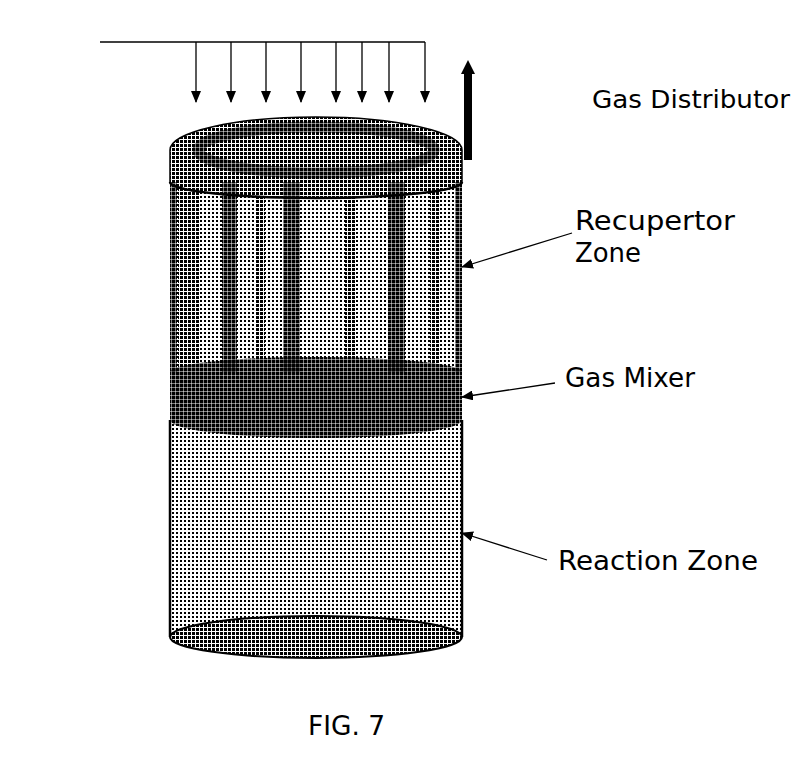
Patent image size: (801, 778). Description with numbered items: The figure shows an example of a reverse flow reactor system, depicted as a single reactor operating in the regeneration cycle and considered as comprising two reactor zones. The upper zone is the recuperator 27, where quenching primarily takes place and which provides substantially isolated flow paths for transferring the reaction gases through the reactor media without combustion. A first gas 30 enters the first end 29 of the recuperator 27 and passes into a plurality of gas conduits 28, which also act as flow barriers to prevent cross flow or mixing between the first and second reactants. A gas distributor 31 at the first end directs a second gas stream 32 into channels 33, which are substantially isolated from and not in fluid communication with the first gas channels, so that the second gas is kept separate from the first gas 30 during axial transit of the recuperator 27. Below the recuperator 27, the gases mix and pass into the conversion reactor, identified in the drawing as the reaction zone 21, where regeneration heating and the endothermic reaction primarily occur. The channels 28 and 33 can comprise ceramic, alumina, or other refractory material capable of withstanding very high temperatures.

The reaction zone 21 is at (316, 539).
The recuperator 27 is at (316, 279).
The gas conduits 28 is at (437, 233).
The first end 29 is at (465, 180).
The first gas 30 is at (238, 65).
The gas distributor 31 is at (473, 142).
The second gas stream 32 is at (469, 94).
The channels 33 is at (400, 348).